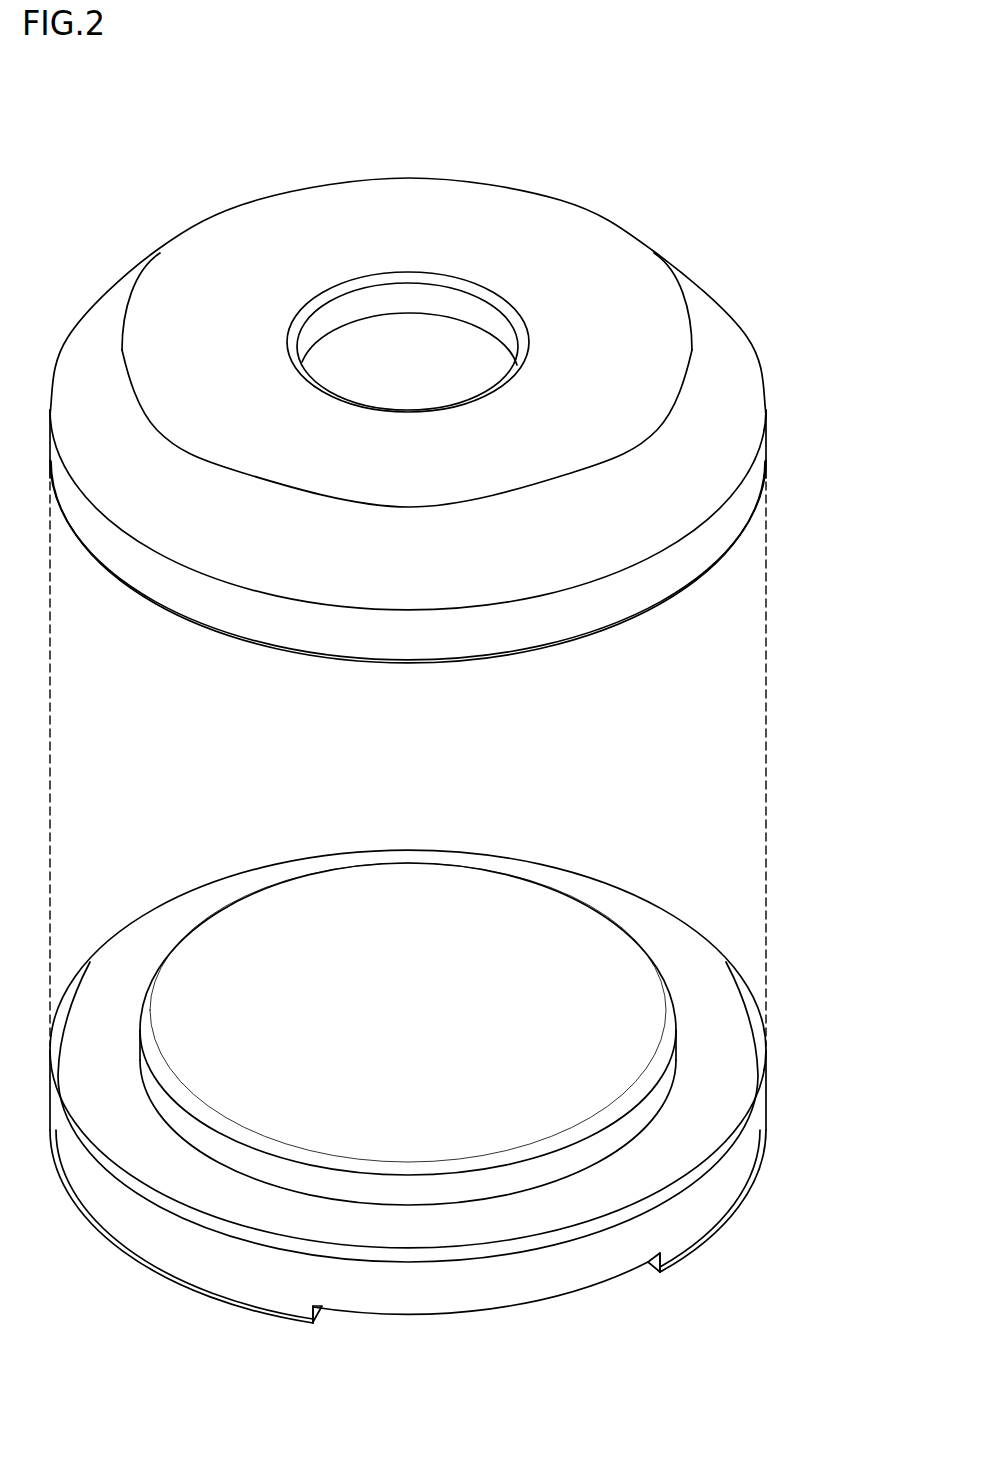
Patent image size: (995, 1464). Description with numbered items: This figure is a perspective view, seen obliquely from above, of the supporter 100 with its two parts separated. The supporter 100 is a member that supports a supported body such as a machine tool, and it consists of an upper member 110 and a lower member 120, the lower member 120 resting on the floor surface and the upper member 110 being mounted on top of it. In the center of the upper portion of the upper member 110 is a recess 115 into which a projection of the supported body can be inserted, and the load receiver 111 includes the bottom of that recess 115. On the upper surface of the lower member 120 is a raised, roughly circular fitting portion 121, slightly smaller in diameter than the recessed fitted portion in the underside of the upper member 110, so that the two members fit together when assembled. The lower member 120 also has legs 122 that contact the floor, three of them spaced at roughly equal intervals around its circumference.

The supporter 100 is at (654, 219).
The upper member 110 is at (607, 597).
The load receiver 111 is at (402, 358).
The recess 115 is at (448, 300).
The lower member 120 is at (173, 1238).
The fitting portion 121 is at (177, 1113).
The legs 122 is at (318, 1308).